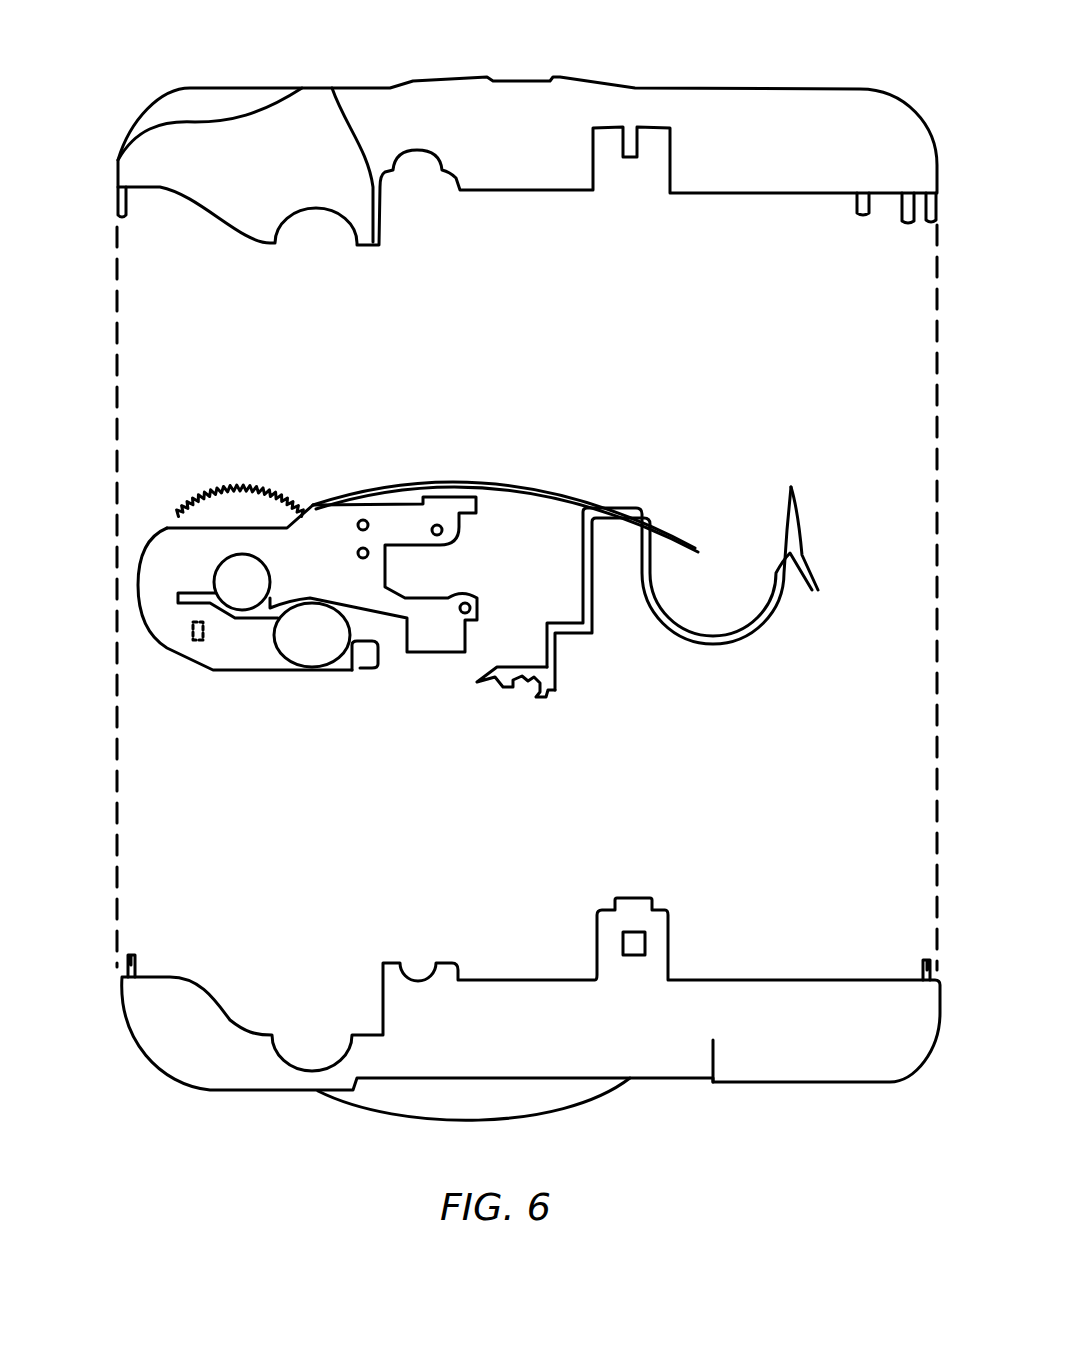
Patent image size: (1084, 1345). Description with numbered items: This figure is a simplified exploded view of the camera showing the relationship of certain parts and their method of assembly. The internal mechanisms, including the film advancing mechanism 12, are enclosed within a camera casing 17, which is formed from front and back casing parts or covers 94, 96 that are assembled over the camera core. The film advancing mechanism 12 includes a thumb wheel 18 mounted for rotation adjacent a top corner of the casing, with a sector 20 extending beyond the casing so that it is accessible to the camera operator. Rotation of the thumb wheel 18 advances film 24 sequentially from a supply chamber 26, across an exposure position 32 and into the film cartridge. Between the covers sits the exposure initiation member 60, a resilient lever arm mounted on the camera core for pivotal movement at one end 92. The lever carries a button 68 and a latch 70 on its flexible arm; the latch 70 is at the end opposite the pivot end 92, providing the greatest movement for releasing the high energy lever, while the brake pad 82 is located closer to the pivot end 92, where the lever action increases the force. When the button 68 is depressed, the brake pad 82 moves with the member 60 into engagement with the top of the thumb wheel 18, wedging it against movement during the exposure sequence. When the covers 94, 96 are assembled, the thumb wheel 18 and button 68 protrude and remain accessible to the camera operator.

The film advancing mechanism 12 is at (170, 474).
The camera casing 17 is at (803, 108).
The thumb wheel 18 is at (277, 517).
The sector 20 is at (238, 500).
The film 24 is at (393, 492).
The supply chamber 26 is at (760, 607).
The exposure position 32 is at (482, 485).
The exposure initiation member 60 is at (278, 657).
The button 68 is at (332, 645).
The latch 70 is at (378, 645).
The brake pad 82 is at (178, 633).
The pivot end 92 is at (143, 615).
The front casing part 94 is at (787, 998).
The back casing part 96 is at (390, 107).